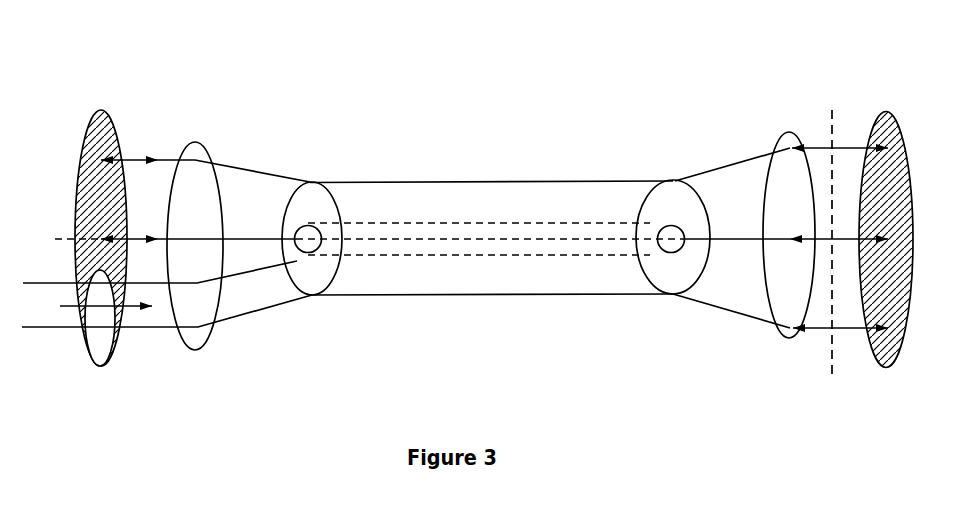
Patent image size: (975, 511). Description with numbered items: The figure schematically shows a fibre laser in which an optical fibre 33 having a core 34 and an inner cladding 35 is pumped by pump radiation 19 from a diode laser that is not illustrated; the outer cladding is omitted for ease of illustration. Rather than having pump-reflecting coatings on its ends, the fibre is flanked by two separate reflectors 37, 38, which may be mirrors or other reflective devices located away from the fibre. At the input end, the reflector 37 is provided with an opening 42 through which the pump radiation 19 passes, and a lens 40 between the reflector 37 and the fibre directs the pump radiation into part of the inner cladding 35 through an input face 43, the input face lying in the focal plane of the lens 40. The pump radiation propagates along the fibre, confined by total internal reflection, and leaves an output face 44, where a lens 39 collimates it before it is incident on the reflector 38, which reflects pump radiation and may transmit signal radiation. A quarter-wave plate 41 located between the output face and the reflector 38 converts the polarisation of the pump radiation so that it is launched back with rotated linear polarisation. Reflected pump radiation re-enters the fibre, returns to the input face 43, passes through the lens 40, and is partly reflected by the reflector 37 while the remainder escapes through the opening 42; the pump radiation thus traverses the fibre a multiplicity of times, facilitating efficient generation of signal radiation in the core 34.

The pump radiation 19 is at (132, 307).
The optical fibre 33 is at (427, 198).
The core 34 is at (470, 233).
The inner cladding 35 is at (560, 208).
The reflector 37 is at (105, 123).
The reflector 38 is at (888, 130).
The lens 39 is at (790, 147).
The lens 40 is at (196, 153).
The quarter-wave plate 41 is at (832, 110).
The opening 42 is at (100, 320).
The input face 43 is at (315, 200).
The output face 44 is at (677, 203).